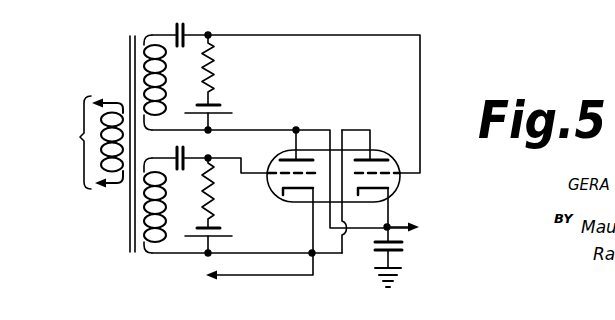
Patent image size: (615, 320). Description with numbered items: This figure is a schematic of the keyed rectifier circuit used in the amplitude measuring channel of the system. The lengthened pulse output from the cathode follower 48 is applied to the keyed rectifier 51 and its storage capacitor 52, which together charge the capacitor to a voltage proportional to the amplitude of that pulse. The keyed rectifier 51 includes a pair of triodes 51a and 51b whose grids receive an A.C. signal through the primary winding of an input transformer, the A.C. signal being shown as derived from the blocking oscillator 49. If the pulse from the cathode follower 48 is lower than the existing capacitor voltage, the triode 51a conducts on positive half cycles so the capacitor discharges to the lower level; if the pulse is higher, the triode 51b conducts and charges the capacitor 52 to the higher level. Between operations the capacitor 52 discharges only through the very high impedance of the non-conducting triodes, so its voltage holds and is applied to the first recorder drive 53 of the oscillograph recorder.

The keyed rectifier 51 is at (227, 21).
The triode 51a is at (311, 158).
The triode 51b is at (390, 158).
The storage capacitor 52 is at (374, 243).
The blocking oscillator 49 is at (67, 142).
The cathode follower 48 is at (216, 225).
The first recorder drive 53 is at (451, 229).